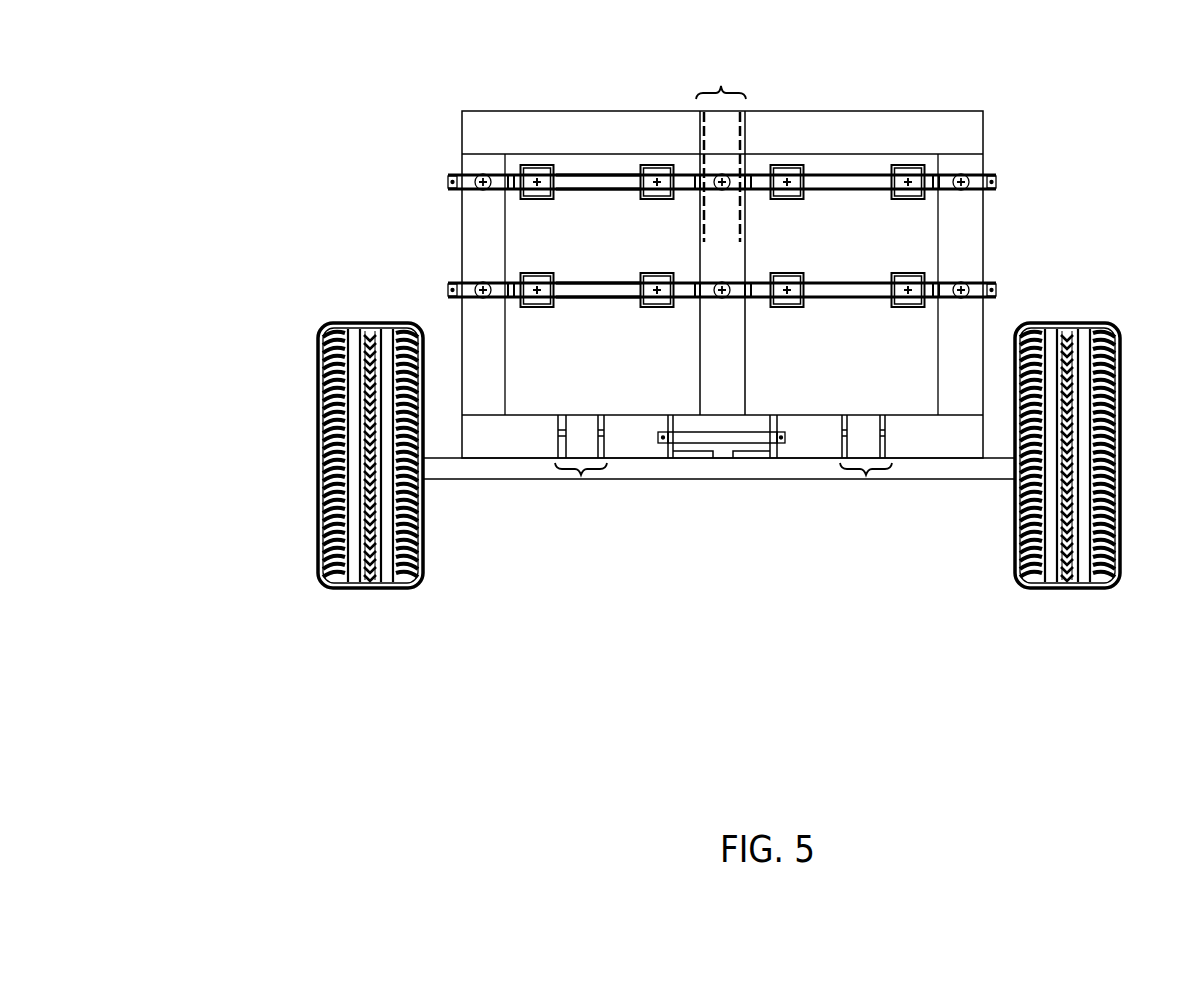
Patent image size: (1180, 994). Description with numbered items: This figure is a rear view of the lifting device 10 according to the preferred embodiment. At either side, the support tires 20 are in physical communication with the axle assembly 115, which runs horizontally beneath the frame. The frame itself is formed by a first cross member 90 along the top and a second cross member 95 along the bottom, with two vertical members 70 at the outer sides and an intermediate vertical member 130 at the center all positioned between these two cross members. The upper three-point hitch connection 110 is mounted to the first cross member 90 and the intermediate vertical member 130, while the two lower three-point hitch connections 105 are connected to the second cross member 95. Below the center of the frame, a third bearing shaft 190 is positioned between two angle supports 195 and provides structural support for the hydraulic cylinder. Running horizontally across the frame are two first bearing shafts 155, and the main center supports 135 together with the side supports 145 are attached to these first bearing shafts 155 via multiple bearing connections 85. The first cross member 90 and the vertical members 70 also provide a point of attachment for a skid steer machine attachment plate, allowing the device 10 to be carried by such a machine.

The device 10 is at (267, 733).
The support tires 20 is at (372, 582).
The vertical members 70 is at (480, 243).
The bearing connections 85 is at (803, 180).
The first cross member 90 is at (795, 133).
The second cross member 95 is at (528, 440).
The lower three-point hitch connection 105 is at (582, 475).
The upper three-point hitch connection 110 is at (721, 86).
The axle assembly 115 is at (706, 470).
The intermediate vertical member 130 is at (725, 265).
The main center supports 135 is at (657, 200).
The side supports 145 is at (538, 168).
The first bearing shafts 155 is at (588, 180).
The third bearing shaft 190 is at (720, 436).
The angle supports 195 is at (671, 455).